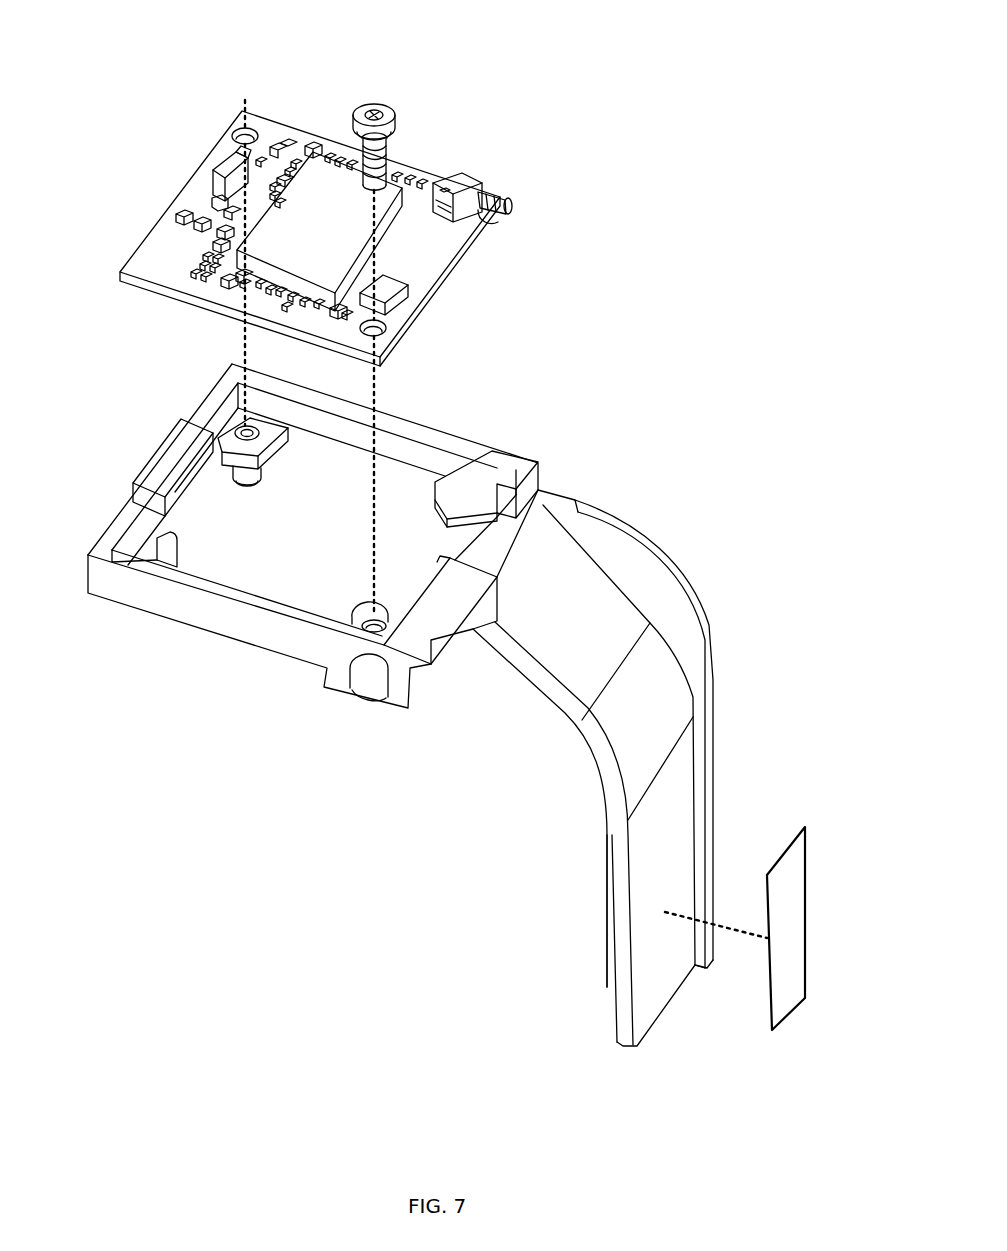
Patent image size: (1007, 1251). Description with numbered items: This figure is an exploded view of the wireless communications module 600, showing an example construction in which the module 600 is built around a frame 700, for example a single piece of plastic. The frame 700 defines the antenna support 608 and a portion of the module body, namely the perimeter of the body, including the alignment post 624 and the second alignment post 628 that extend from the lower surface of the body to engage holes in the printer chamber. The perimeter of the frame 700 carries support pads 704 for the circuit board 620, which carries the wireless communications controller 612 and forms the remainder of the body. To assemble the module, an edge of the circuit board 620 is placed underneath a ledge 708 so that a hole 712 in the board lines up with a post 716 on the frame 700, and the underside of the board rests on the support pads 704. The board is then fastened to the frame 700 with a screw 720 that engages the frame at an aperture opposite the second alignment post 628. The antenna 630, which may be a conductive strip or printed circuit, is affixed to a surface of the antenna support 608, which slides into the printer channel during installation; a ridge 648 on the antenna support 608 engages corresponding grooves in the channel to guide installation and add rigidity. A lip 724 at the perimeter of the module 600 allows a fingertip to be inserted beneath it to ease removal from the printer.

The wireless communications module 600 is at (655, 208).
The antenna support 608 is at (710, 697).
The wireless communications controller 612 is at (319, 183).
The circuit board 620 is at (433, 162).
The alignment post 624 is at (249, 481).
The second alignment post 628 is at (371, 708).
The antenna 630 is at (804, 937).
The ridge 648 is at (606, 980).
The frame 700 is at (606, 492).
The support pads 704 is at (468, 492).
The ledge 708 is at (158, 477).
The hole 712 is at (238, 134).
The post 716 is at (240, 430).
The screw 720 is at (376, 104).
The lip 724 is at (437, 656).